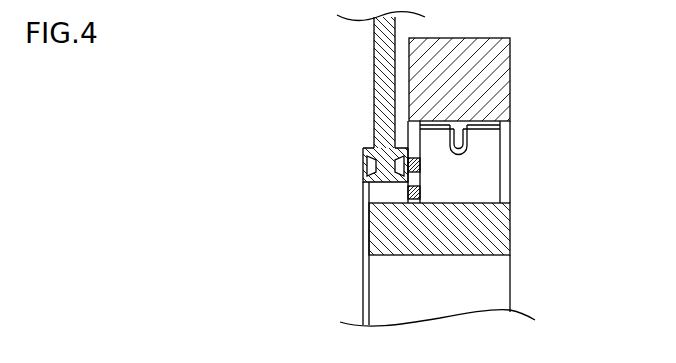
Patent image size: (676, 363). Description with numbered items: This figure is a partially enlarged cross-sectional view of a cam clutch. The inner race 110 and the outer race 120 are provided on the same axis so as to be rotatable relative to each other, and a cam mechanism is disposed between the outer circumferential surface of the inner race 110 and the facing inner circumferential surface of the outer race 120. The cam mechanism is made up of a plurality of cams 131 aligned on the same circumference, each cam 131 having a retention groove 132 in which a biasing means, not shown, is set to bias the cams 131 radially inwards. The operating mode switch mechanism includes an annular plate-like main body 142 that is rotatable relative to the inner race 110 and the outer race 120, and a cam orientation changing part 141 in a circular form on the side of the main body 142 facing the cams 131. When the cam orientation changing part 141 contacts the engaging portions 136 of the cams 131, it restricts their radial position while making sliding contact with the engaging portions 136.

The inner race 110 is at (383, 233).
The outer race 120 is at (472, 68).
The cam 131 is at (487, 166).
The retention groove 132 is at (473, 117).
The engaging portion 136 is at (410, 173).
The cam orientation changing part 141 is at (398, 172).
The main body 142 is at (385, 62).